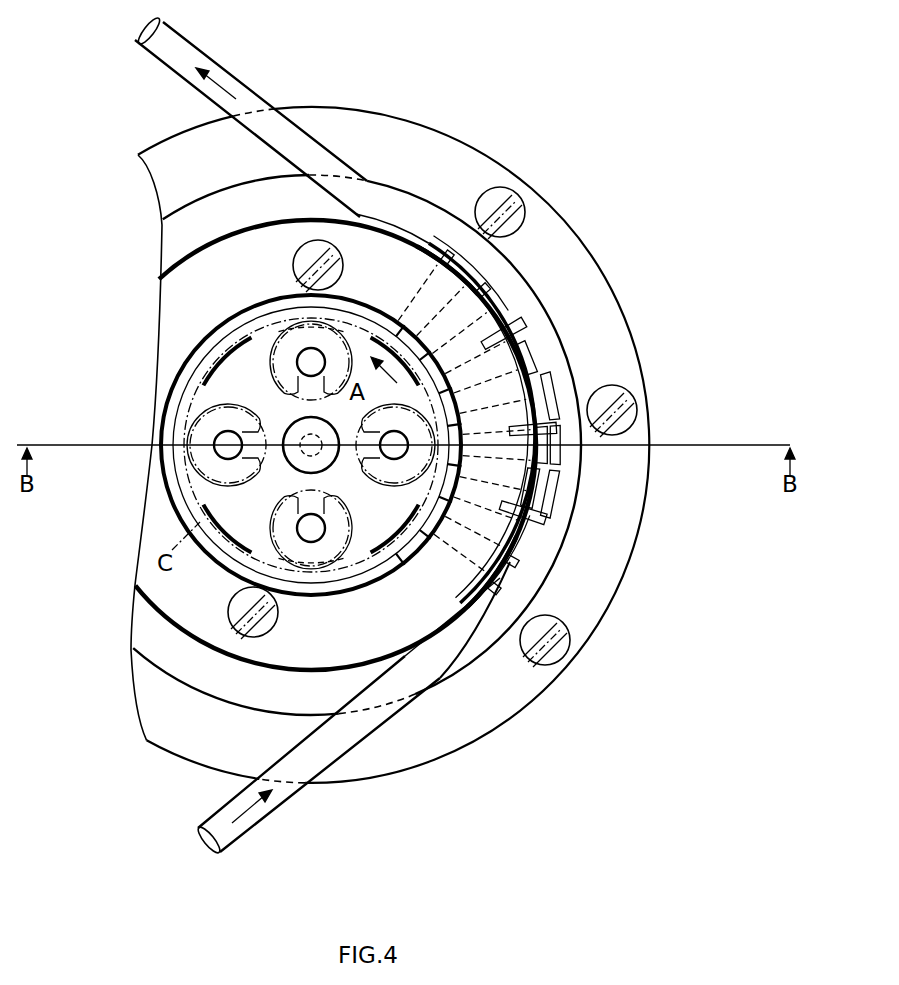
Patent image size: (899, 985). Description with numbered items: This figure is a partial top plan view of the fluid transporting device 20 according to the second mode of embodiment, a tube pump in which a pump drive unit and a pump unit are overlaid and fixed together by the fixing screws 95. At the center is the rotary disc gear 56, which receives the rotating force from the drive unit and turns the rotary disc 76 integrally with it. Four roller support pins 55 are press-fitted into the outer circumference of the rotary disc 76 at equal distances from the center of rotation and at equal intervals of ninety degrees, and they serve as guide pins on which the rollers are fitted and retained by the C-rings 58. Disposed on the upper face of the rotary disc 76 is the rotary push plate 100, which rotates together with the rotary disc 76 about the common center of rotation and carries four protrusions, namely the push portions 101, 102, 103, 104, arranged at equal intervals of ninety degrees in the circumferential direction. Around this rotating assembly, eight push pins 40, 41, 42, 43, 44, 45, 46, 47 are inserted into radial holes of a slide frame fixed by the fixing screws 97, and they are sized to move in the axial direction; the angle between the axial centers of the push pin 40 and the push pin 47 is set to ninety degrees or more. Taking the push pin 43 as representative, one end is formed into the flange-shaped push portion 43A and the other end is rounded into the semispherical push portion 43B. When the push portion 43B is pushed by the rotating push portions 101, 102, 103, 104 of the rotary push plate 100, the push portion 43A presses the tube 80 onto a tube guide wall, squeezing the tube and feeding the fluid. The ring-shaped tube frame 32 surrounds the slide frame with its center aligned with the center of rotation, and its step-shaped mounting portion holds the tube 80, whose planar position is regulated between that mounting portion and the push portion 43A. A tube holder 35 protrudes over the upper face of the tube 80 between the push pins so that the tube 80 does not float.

The fluid transporting device 20 is at (566, 69).
The tube frame 32 is at (385, 114).
The tube holder 35 is at (523, 326).
The push pin 40 is at (511, 597).
The push pin 41 is at (512, 560).
The push pin 42 is at (553, 506).
The push pin 43 is at (555, 467).
The push portion 43A is at (566, 447).
The push portion 43B is at (447, 510).
The push pin 44 is at (552, 386).
The push pin 45 is at (541, 345).
The push pin 46 is at (500, 283).
The push pin 47 is at (444, 258).
The roller support pin 55 is at (395, 440).
The rotary disc gear 56 is at (310, 379).
The C-ring 58 is at (310, 510).
The rotary disc 76 is at (209, 553).
The tube 80 is at (220, 62).
The fixing screw 95 is at (505, 187).
The fixing screw 97 is at (322, 241).
The rotary push plate 100 is at (232, 366).
The push portion 101 is at (372, 546).
The push portion 102 is at (300, 322).
The push portion 103 is at (178, 452).
The push portion 104 is at (314, 576).